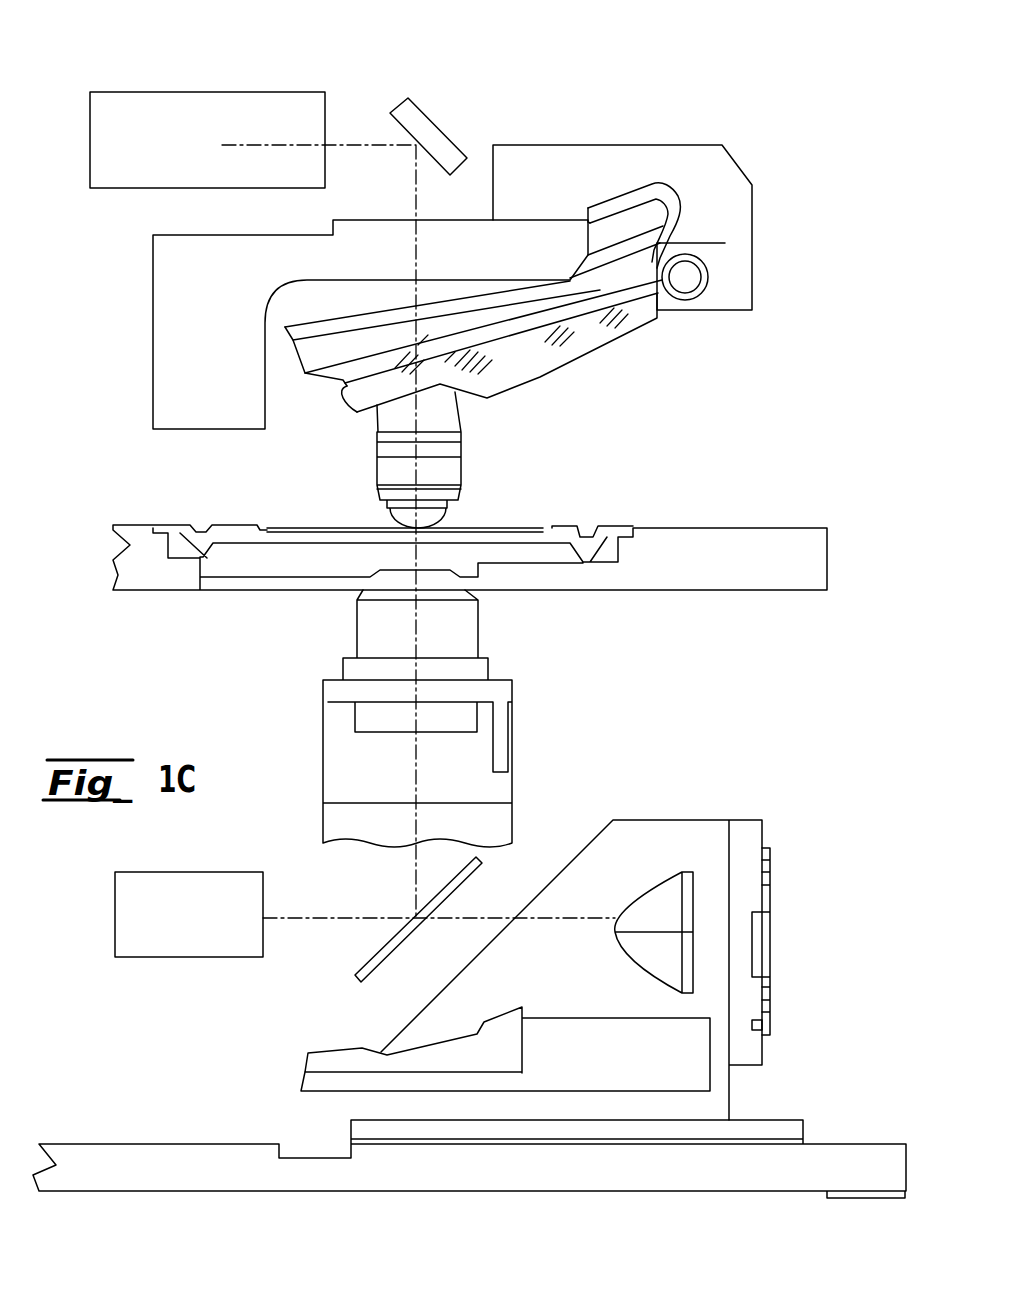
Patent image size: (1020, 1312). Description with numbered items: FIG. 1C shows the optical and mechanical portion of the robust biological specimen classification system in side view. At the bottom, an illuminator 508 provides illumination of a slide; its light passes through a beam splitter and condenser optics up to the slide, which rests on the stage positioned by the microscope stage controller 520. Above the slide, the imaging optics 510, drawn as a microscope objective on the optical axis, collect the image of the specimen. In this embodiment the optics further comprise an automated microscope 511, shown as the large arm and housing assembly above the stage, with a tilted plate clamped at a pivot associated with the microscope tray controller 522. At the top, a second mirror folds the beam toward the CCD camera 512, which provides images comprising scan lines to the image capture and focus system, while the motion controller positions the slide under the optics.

The illuminator 508 is at (187, 957).
The imaging optics 510 is at (328, 463).
The automated microscope 511 is at (486, 252).
The CCD camera 512 is at (248, 92).
The microscope stage controller 520 is at (772, 528).
The microscope tray controller 522 is at (690, 216).